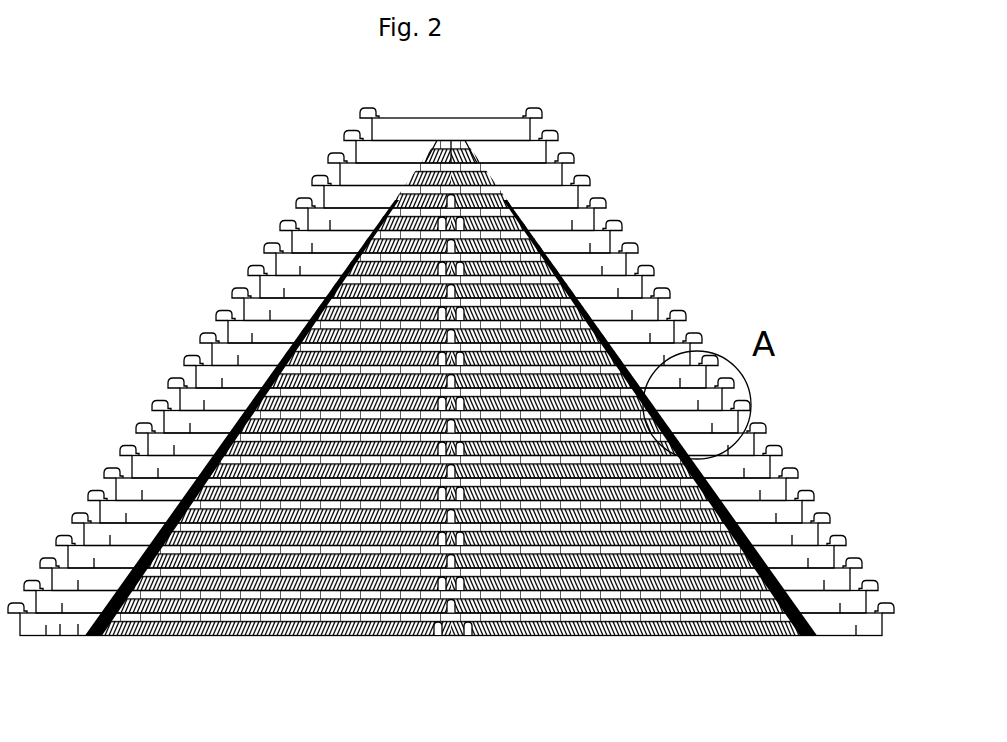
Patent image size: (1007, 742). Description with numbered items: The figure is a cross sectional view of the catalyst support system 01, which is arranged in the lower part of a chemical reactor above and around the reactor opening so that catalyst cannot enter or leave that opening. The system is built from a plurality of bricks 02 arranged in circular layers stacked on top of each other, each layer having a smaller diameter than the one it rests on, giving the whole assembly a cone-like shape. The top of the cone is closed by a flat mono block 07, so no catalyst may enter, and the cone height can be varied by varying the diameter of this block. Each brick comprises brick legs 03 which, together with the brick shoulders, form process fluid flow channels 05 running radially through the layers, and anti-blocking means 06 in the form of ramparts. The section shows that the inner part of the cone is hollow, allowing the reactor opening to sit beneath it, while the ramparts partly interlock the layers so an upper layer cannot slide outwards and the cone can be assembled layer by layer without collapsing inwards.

The catalyst support system 01 is at (140, 145).
The brick 02 is at (233, 333).
The brick leg 03 is at (429, 640).
The flow channel 05 is at (483, 644).
The anti-blocking means 06 is at (255, 271).
The mono block 07 is at (414, 118).